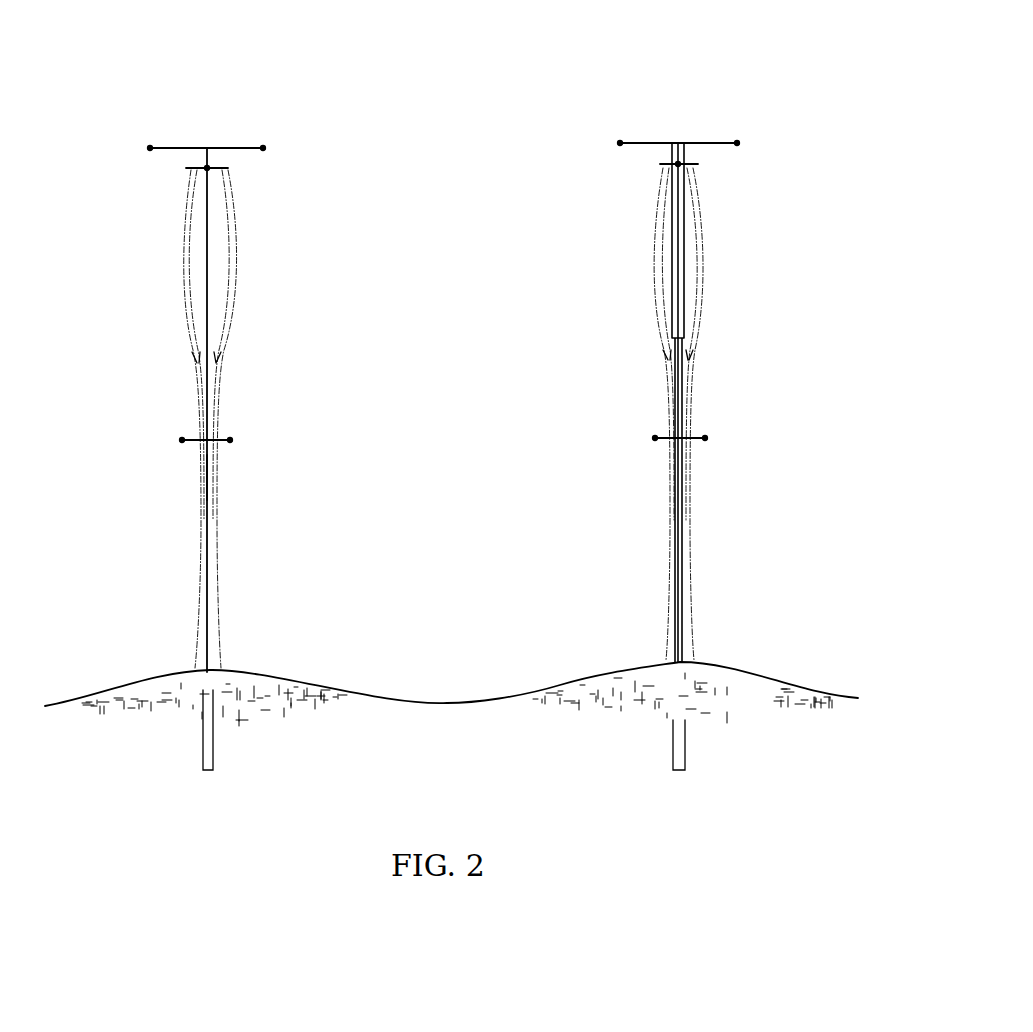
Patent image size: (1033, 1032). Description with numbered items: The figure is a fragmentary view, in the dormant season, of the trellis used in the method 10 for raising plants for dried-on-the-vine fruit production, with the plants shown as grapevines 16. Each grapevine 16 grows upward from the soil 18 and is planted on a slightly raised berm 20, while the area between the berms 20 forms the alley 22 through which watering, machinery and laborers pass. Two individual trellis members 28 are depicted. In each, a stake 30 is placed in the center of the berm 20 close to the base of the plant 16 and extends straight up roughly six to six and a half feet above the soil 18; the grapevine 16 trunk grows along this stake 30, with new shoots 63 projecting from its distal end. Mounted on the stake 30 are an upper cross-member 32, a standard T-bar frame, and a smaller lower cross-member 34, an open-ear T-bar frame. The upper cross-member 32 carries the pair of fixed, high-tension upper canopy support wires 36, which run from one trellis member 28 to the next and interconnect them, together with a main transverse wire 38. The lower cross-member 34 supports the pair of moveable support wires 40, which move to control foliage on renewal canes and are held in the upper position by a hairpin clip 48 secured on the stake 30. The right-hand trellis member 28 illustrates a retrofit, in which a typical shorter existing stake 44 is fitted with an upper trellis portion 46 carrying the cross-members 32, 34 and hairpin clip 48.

The method for raising plants for dried-on-the-vine fruit production 10 is at (480, 85).
The grapevine 16 is at (218, 547).
The soil 18 is at (125, 682).
The berm 20 is at (250, 675).
The alley 22 is at (452, 702).
The trellis member 28 is at (205, 265).
The stake 30 is at (205, 474).
The upper cross-member 32 is at (700, 142).
The lower cross-member 34 is at (662, 437).
The upper canopy support wires 36 is at (262, 140).
The main transverse wire 38 is at (212, 175).
The moveable support wires 40 is at (229, 437).
The existing stake 44 is at (690, 405).
The upper trellis portion 46 is at (688, 223).
The hairpin clip 48 is at (660, 168).
The new shoots 63 is at (232, 356).